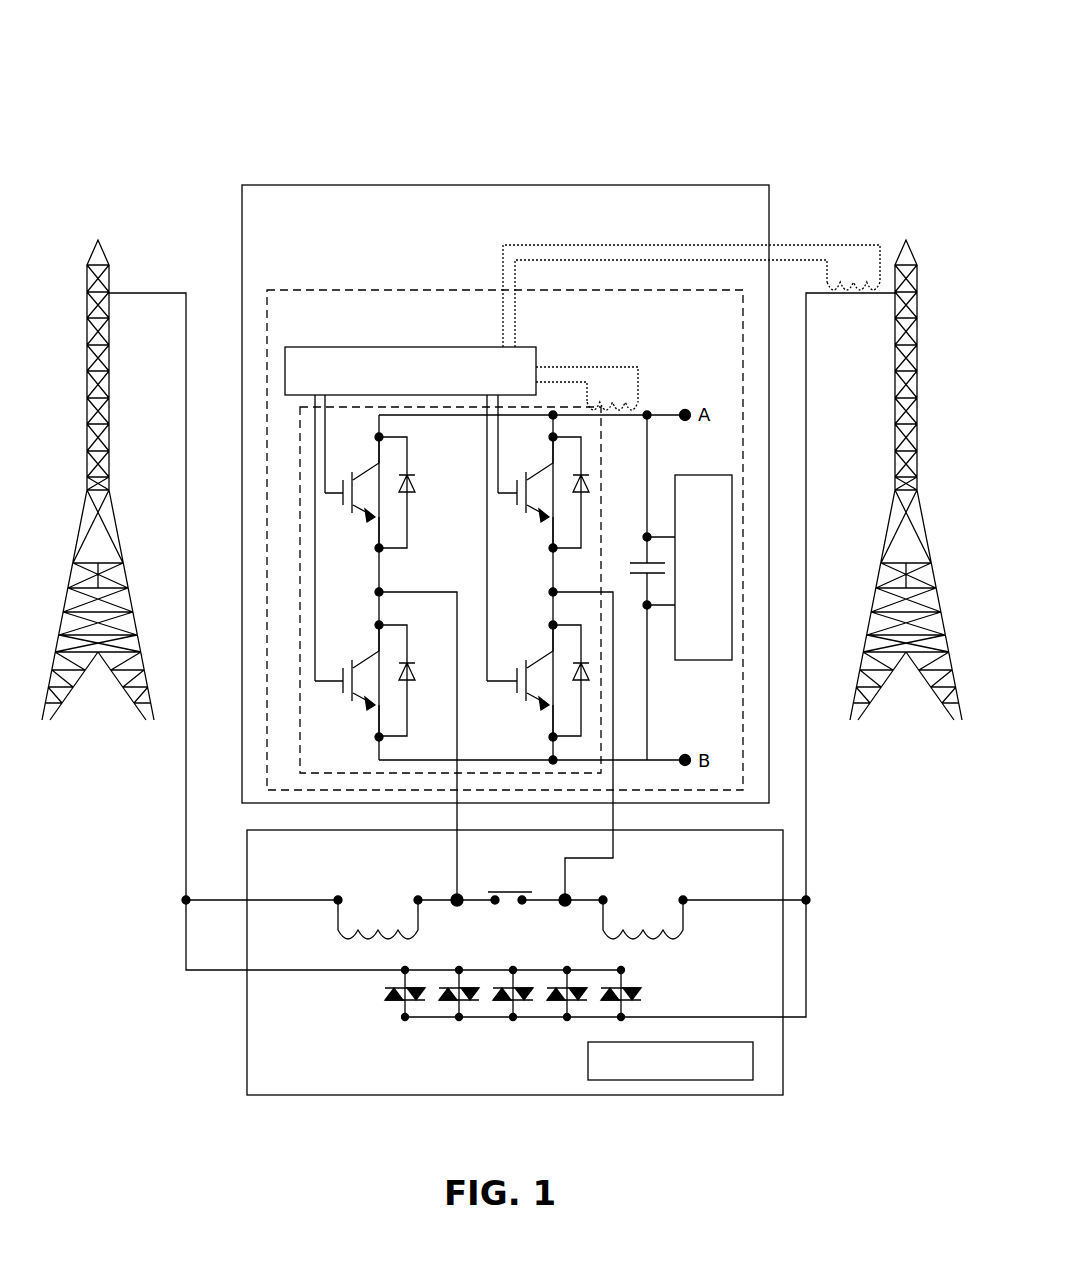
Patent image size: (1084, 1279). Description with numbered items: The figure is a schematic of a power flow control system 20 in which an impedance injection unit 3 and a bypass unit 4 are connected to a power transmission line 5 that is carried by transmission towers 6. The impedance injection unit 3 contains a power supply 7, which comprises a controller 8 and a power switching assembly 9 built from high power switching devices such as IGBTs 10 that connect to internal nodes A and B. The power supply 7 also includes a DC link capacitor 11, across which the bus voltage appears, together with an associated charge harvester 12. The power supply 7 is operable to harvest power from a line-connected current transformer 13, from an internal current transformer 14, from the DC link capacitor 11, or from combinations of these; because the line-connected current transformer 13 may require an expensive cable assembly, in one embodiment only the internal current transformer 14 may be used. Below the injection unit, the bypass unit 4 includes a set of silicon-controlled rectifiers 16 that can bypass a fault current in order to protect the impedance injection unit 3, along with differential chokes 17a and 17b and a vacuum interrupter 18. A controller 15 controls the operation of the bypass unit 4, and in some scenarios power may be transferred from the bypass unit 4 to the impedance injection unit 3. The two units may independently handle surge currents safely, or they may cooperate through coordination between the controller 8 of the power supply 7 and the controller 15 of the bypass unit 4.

The power flow control system 20 is at (293, 98).
The impedance injection unit 3 is at (345, 185).
The bypass unit 4 is at (785, 872).
The power transmission line 5 is at (148, 292).
The transmission tower 6 is at (112, 432).
The power supply 7 is at (303, 290).
The controller 8 is at (420, 346).
The power switching assembly 9 is at (300, 718).
The IGBT 10 is at (364, 463).
The DC link capacitor 11 is at (637, 556).
The charge harvester 12 is at (713, 665).
The line-connected current transformer 13 is at (845, 240).
The internal current transformer 14 is at (612, 366).
The controller 15 is at (680, 1082).
The silicon-controlled rectifiers 16 is at (510, 1024).
The differential choke 17a is at (335, 926).
The differential choke 17b is at (688, 920).
The vacuum interrupter 18 is at (507, 886).